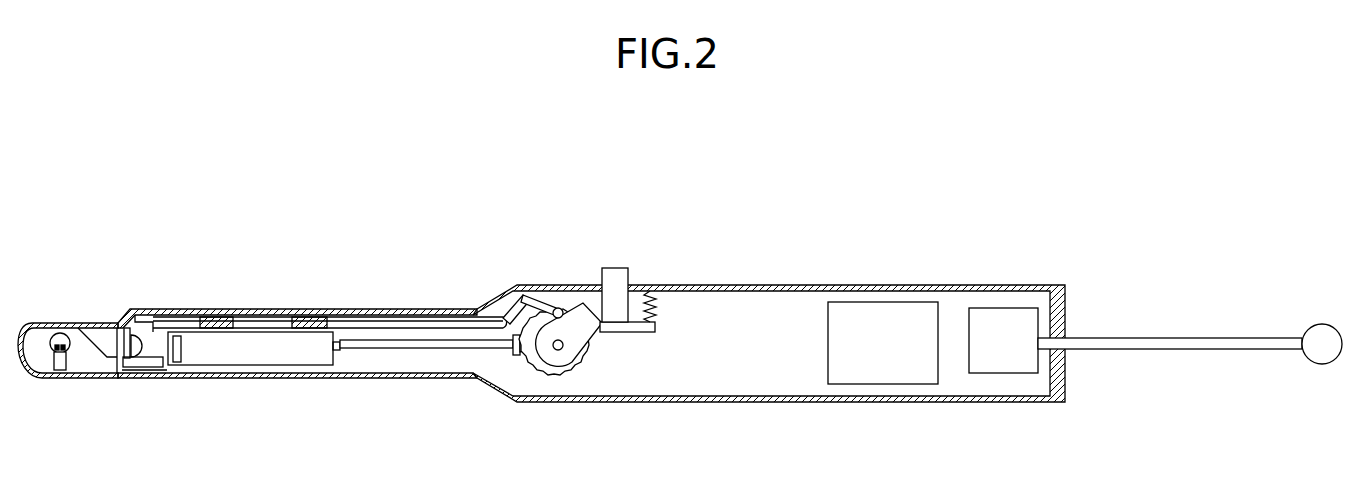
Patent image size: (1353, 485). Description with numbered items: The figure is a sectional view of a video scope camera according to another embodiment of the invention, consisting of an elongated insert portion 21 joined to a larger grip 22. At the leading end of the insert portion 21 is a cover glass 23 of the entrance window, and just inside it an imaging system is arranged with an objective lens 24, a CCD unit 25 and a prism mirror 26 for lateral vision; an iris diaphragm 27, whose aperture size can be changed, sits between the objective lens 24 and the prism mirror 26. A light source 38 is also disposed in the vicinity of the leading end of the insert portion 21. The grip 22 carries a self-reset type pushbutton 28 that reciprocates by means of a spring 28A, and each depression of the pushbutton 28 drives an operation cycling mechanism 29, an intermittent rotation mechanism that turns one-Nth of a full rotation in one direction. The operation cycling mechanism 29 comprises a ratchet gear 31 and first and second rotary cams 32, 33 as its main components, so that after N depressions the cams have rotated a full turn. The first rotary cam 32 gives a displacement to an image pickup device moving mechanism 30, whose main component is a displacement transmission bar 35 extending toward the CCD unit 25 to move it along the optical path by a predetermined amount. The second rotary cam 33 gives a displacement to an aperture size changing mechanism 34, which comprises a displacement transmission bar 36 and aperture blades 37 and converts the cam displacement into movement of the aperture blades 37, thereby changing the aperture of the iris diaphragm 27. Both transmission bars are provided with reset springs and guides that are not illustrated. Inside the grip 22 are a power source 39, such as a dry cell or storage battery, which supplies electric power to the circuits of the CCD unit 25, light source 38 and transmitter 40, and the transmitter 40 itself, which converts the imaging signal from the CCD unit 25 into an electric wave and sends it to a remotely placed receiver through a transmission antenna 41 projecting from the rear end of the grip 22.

The insert portion 21 is at (188, 310).
The grip 22 is at (790, 285).
The cover glass 23 is at (79, 323).
The objective lens 24 is at (144, 348).
The CCD unit 25 is at (182, 347).
The prism mirror 26 is at (101, 360).
The iris diaphragm 27 is at (124, 352).
The pushbutton 28 is at (612, 268).
The spring 28A is at (656, 300).
The operation cycling mechanism 29 is at (586, 363).
The image pickup device moving mechanism 30 is at (273, 353).
The ratchet gear 31 is at (560, 376).
The first rotary cam 32 is at (530, 358).
The second rotary cam 33 is at (540, 294).
The aperture size changing mechanism 34 is at (139, 318).
The displacement transmission bar 35 is at (392, 348).
The displacement transmission bar 36 is at (381, 318).
The aperture blades 37 is at (130, 362).
The light source 38 is at (57, 362).
The power source 39 is at (883, 302).
The transmitter 40 is at (1048, 318).
The transmission antenna 41 is at (1162, 338).